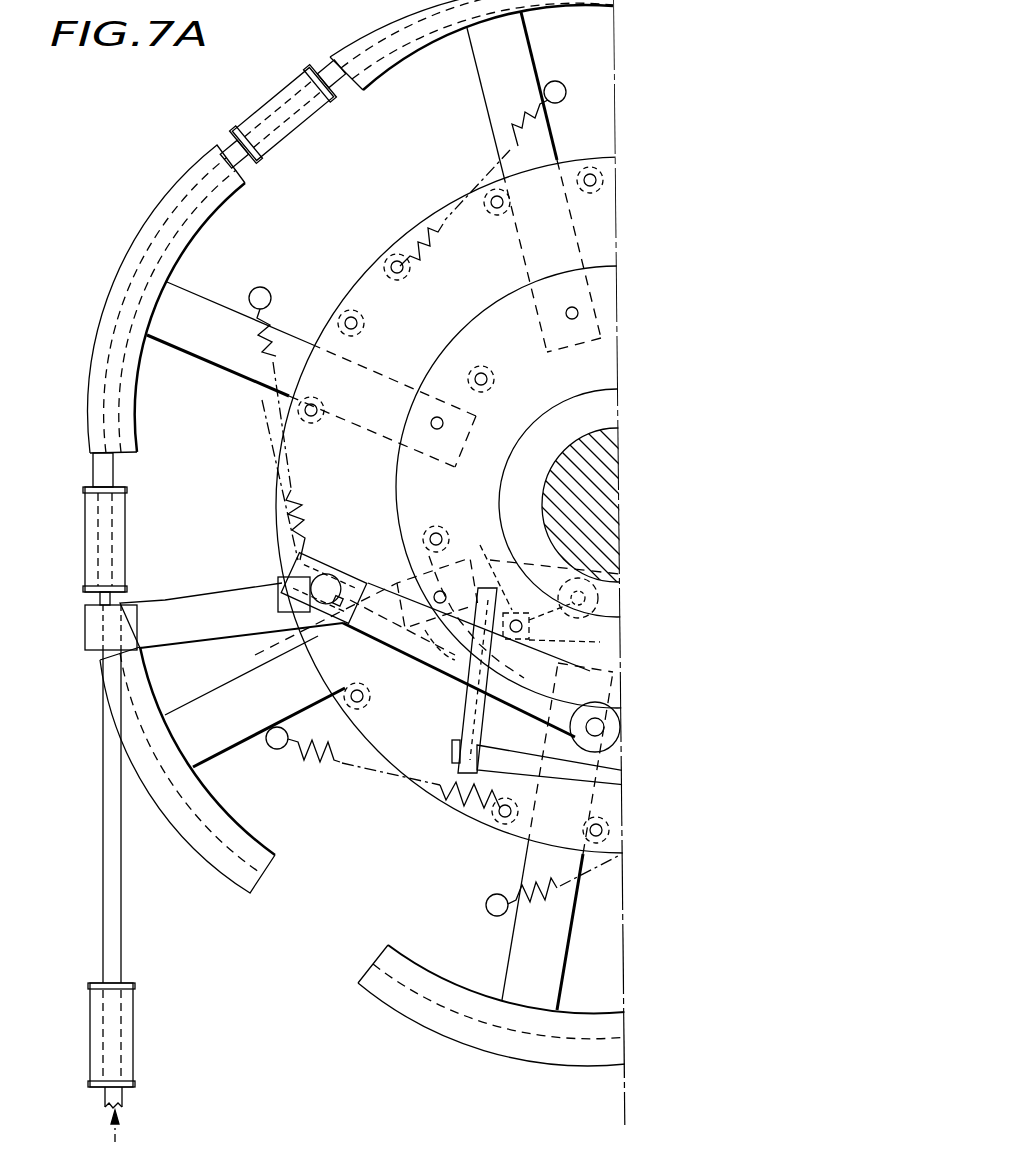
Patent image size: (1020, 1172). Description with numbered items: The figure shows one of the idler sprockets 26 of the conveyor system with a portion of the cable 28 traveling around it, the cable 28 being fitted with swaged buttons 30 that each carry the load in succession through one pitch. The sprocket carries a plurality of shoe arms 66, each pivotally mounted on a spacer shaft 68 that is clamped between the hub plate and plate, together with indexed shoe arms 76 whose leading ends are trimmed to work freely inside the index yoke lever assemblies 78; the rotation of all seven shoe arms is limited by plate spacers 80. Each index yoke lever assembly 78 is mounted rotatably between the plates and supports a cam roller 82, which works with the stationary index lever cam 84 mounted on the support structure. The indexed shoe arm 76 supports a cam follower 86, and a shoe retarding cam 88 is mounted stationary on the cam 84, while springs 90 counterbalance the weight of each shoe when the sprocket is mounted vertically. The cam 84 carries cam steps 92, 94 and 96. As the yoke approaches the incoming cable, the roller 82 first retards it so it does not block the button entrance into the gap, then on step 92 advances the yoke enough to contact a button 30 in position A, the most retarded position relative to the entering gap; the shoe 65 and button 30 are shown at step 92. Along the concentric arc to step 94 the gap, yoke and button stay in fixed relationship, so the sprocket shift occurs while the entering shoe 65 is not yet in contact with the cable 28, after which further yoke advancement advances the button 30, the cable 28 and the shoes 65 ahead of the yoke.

The idler sprocket 26 is at (287, 60).
The cable 28 is at (105, 845).
The swaged button 30 is at (127, 552).
The shoe 65 is at (245, 880).
The shoe arm 66 is at (524, 50).
The spacer shaft 68 is at (445, 424).
The indexed shoe arm 76 is at (207, 705).
The index yoke lever assembly 78 is at (222, 590).
The plate spacer 80 is at (365, 678).
The cam roller 82 is at (585, 742).
The index lever cam 84 is at (462, 660).
The cam follower 86 is at (655, 592).
The shoe retarding cam 88 is at (490, 545).
The spring 90 is at (343, 765).
The cam step 92 is at (440, 650).
The cam step 94 is at (393, 430).
The cam step 96 is at (423, 312).
The position A is at (80, 620).